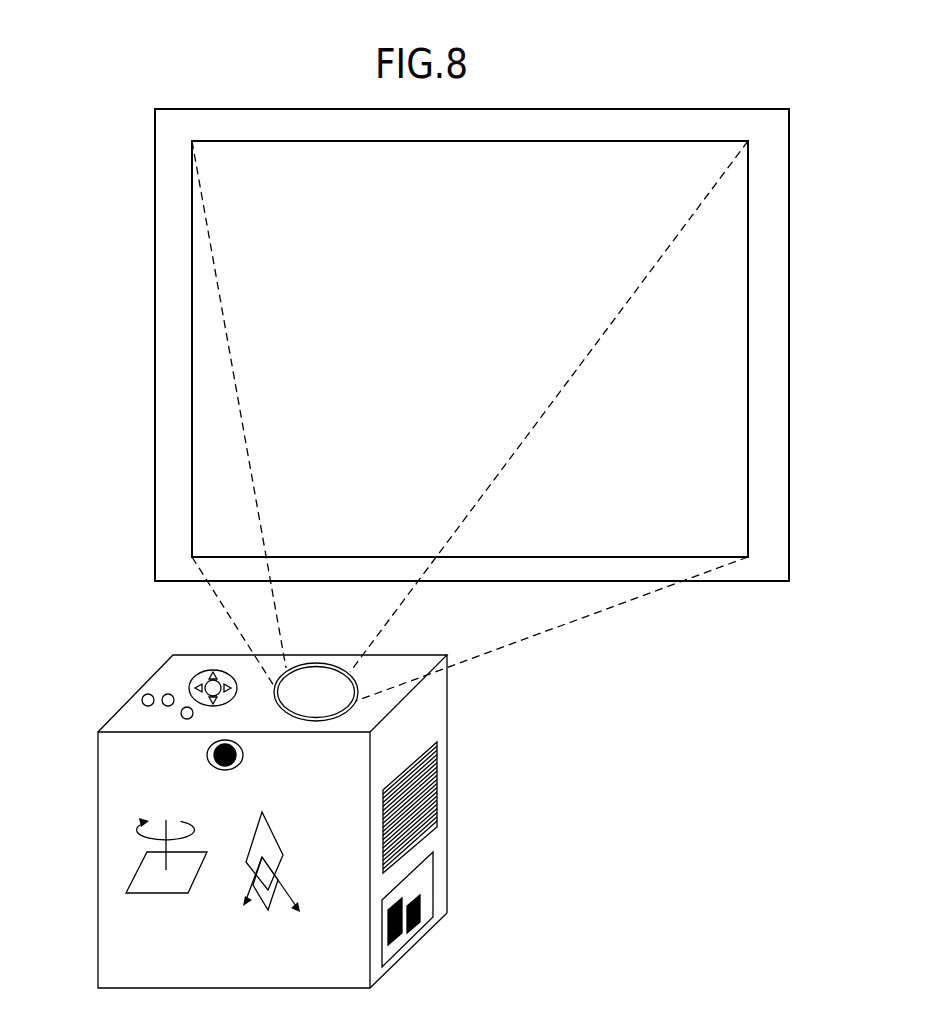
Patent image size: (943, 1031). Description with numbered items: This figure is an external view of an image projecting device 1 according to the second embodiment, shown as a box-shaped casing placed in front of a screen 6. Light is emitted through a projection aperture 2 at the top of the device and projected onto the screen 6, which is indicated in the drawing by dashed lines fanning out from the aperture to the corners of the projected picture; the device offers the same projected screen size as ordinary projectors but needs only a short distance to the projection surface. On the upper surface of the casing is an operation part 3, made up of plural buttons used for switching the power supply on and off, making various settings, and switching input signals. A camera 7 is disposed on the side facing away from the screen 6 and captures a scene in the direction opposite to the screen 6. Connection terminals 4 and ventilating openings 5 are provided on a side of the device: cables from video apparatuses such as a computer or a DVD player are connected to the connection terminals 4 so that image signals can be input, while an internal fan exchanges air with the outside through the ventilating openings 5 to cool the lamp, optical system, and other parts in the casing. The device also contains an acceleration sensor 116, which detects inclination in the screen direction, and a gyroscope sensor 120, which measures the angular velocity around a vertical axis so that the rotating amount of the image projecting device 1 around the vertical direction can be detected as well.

The image projecting device 1 is at (60, 738).
The projection aperture 2 is at (318, 703).
The operation part 3 is at (163, 683).
The connection terminals 4 is at (408, 922).
The ventilating openings 5 is at (420, 805).
The screen 6 is at (772, 428).
The camera 7 is at (245, 752).
The acceleration sensor 116 is at (265, 843).
The gyroscope sensor 120 is at (147, 868).